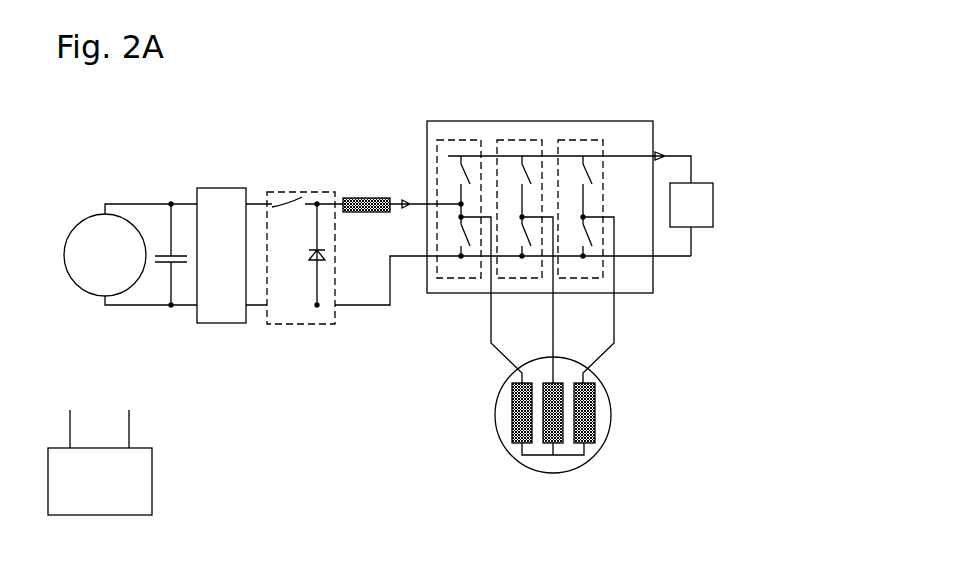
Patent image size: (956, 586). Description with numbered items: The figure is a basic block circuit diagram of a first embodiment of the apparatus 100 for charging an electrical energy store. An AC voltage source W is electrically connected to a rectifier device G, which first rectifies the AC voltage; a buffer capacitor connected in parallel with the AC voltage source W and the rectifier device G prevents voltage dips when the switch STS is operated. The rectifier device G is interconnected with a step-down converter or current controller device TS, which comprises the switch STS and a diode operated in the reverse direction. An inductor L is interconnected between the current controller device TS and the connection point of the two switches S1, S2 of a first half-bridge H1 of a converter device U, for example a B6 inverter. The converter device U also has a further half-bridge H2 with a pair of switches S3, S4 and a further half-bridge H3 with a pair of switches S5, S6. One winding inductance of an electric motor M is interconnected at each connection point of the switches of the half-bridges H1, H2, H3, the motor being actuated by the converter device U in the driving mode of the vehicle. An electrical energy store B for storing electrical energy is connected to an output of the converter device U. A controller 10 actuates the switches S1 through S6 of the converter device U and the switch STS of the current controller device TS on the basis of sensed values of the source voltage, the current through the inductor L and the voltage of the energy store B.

The AC voltage source W is at (76, 227).
The rectifier device G is at (221, 188).
The switch STS is at (290, 200).
The current controller device TS is at (297, 324).
The inductor L is at (364, 198).
The converter device U is at (640, 293).
The first half-bridge H1 is at (454, 140).
The further half-bridge H2 is at (513, 140).
The further half-bridge H3 is at (573, 140).
The switch S1 is at (454, 186).
The switch S2 is at (454, 236).
The switch S3 is at (515, 186).
The switch S4 is at (515, 236).
The switch S5 is at (576, 186).
The switch S6 is at (576, 236).
The electrical energy store B is at (698, 183).
The electric motor M is at (611, 410).
The controller 10 is at (152, 478).
The apparatus 100 is at (308, 491).